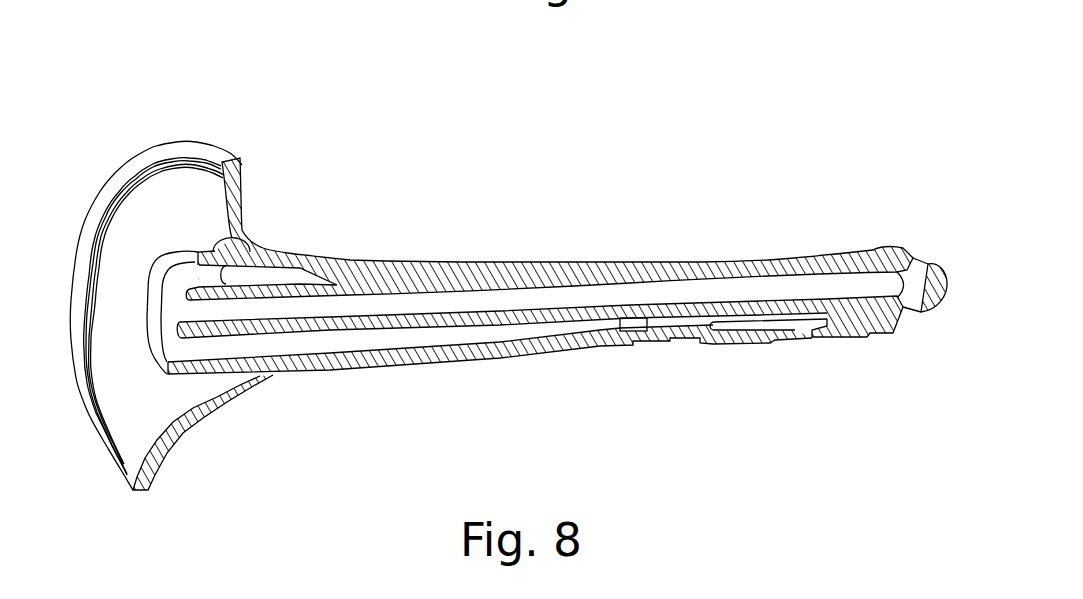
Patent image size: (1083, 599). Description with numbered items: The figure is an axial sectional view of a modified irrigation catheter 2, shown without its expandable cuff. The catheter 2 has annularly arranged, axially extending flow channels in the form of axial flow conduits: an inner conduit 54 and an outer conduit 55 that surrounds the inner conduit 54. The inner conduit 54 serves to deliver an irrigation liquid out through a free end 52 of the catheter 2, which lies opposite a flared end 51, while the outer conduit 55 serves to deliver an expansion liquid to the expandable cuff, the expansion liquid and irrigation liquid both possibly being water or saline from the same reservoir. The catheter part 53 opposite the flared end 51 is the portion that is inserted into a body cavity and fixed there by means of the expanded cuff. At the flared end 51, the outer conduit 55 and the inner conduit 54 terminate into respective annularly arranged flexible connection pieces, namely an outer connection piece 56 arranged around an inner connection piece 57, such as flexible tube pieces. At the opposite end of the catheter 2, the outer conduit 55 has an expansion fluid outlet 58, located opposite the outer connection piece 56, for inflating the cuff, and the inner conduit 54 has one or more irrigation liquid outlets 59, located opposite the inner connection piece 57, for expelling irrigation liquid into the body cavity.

The irrigation catheter 2 is at (508, 261).
The flared end 51 is at (491, 261).
The free end 52 is at (924, 268).
The catheter part 53 is at (467, 353).
The inner conduit 54 is at (517, 293).
The outer conduit 55 is at (347, 347).
The outer connection piece 56 is at (212, 257).
The inner connection piece 57 is at (232, 373).
The expansion fluid outlet 58 is at (748, 330).
The irrigation liquid outlet 59 is at (908, 305).